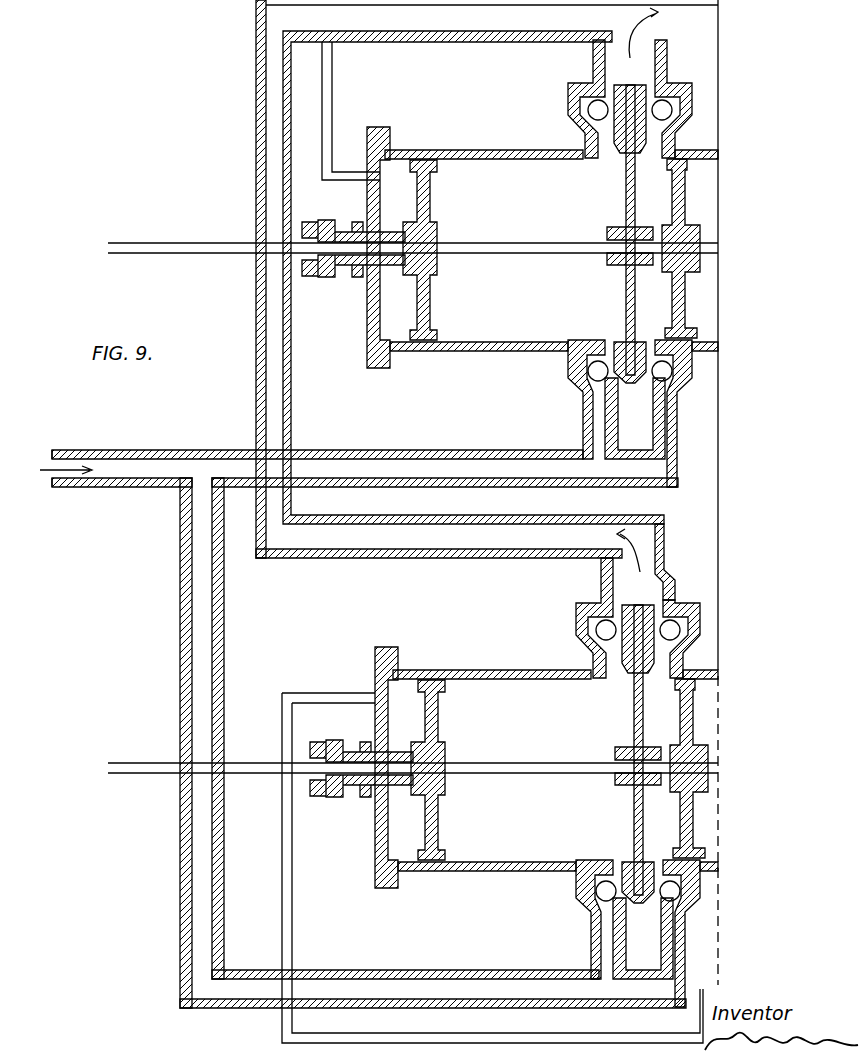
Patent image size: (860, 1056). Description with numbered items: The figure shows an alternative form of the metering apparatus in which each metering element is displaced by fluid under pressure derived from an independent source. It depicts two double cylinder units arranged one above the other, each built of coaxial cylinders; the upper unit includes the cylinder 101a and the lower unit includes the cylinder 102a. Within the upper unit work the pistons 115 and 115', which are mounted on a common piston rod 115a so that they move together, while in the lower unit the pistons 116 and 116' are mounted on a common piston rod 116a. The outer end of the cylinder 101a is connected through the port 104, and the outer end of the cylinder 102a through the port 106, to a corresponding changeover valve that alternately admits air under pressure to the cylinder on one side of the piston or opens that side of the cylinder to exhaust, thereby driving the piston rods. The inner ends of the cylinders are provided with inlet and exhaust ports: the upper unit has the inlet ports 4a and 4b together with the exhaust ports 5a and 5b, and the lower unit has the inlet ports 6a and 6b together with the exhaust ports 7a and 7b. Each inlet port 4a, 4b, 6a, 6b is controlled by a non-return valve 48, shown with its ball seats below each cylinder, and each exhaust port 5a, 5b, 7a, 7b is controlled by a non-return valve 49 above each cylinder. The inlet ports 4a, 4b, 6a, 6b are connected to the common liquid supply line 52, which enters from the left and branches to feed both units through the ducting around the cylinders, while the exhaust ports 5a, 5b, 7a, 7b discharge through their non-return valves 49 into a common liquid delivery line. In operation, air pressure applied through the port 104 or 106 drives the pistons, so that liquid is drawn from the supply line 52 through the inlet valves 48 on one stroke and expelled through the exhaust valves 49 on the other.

The common liquid supply line 52 is at (166, 462).
The cylinder 101a is at (551, 250).
The cylinder 102a is at (555, 770).
The port 104 is at (383, 177).
The port 106 is at (414, 764).
The piston 115 is at (450, 250).
The piston 116 is at (454, 770).
The common piston rod 115a is at (568, 254).
The common piston rod 116a is at (485, 778).
The piston 115' is at (703, 248).
The piston 116' is at (712, 768).
The non-return valve 49 is at (660, 100).
The non-return valve 48 is at (657, 385).
The exhaust port 5a is at (605, 160).
The exhaust port 5b is at (656, 160).
The inlet port 4a is at (606, 345).
The inlet port 4b is at (653, 345).
The exhaust port 7a is at (597, 638).
The exhaust port 7b is at (675, 659).
The inlet port 6a is at (602, 904).
The inlet port 6b is at (677, 918).